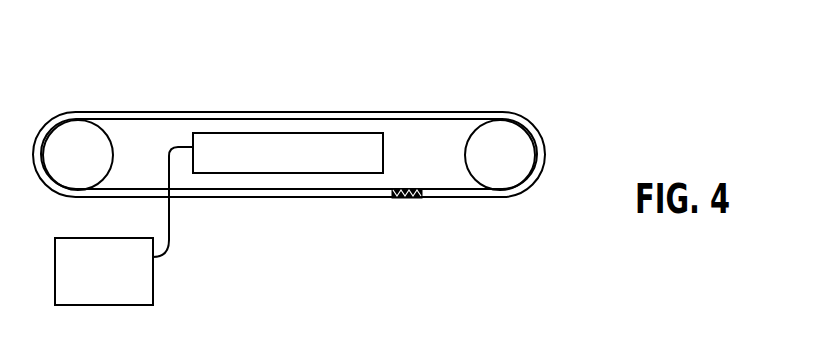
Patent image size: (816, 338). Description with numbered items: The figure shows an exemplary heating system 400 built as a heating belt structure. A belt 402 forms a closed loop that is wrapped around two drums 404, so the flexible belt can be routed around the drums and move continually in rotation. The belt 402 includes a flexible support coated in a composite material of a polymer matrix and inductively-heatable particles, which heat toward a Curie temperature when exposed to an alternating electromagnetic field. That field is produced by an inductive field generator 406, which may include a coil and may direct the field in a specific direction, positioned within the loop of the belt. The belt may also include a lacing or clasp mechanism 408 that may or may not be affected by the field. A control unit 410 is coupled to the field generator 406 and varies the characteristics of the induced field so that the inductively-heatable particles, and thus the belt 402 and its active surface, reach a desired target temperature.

The heating system 400 is at (310, 58).
The belt 402 is at (240, 198).
The drums 404 is at (493, 158).
The inductive field generator 406 is at (305, 163).
The lacing or clasp mechanism 408 is at (407, 198).
The control unit 410 is at (120, 283).